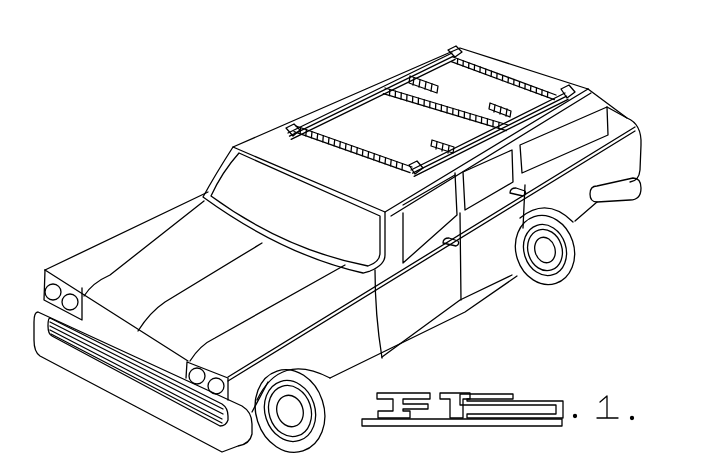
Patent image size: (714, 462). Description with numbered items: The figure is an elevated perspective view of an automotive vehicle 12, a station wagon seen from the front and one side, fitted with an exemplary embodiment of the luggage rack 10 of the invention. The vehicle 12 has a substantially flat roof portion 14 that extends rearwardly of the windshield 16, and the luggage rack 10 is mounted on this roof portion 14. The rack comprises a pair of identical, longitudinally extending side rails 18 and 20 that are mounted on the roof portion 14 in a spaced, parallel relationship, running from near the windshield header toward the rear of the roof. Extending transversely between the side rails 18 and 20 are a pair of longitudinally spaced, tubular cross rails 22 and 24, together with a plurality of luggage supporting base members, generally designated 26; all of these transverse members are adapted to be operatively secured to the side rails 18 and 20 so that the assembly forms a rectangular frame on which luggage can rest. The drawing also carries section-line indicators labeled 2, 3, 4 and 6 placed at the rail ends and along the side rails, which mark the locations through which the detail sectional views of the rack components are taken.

The luggage rack 10 is at (531, 66).
The automotive vehicle 12 is at (337, 275).
The roof portion 14 is at (392, 199).
The windshield 16 is at (226, 165).
The side rail 18 is at (525, 123).
The side rail 20 is at (410, 64).
The cross rail 22 is at (484, 62).
The cross rail 24 is at (389, 147).
The luggage supporting base member 26 is at (385, 166).
The section line 2- 2 is at (456, 35).
The section line 3- 3 is at (364, 114).
The section line 4- 4 is at (309, 134).
The section line 6- 6 is at (318, 112).